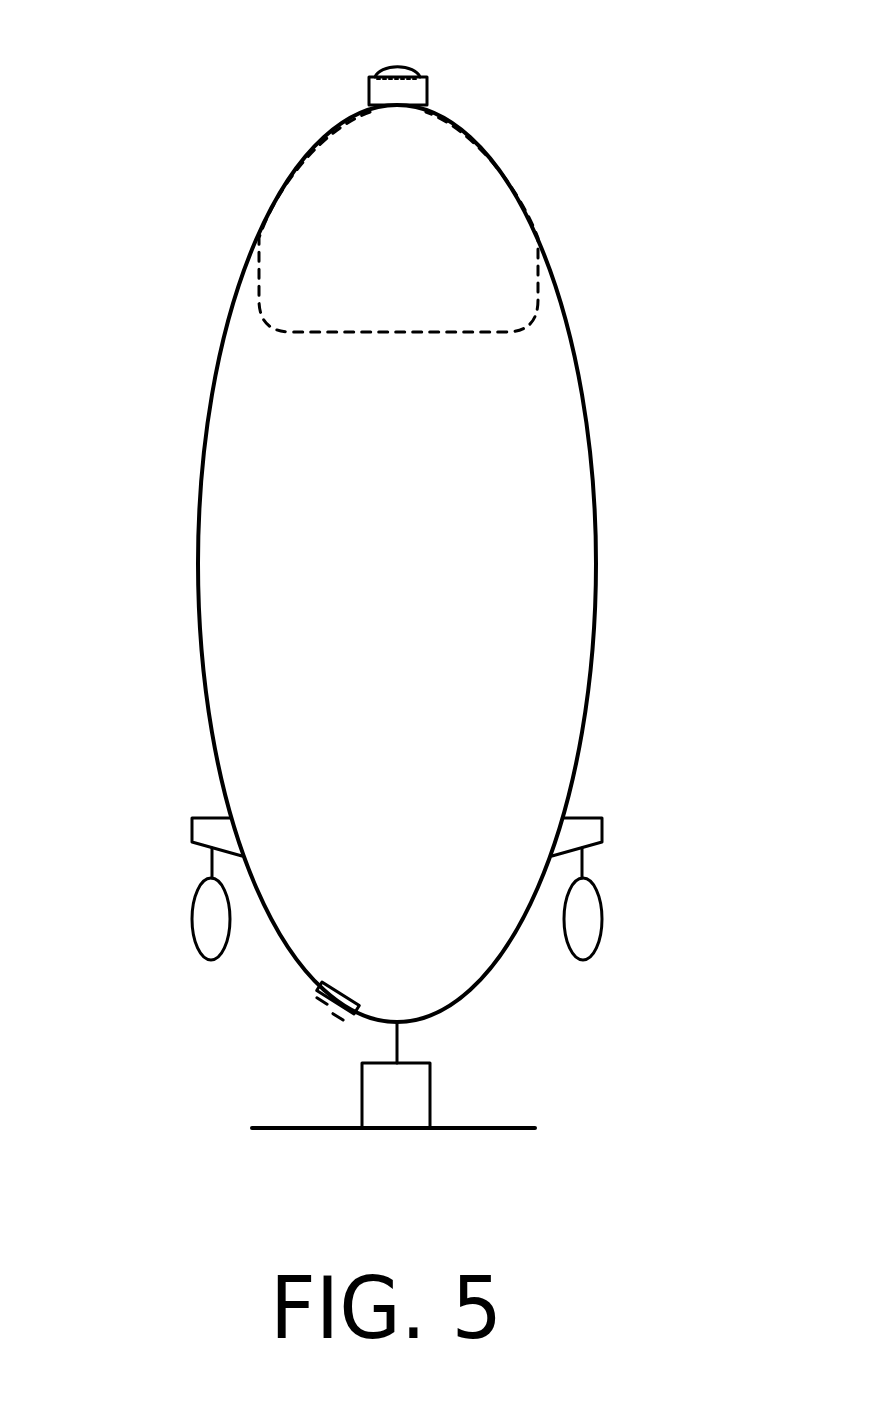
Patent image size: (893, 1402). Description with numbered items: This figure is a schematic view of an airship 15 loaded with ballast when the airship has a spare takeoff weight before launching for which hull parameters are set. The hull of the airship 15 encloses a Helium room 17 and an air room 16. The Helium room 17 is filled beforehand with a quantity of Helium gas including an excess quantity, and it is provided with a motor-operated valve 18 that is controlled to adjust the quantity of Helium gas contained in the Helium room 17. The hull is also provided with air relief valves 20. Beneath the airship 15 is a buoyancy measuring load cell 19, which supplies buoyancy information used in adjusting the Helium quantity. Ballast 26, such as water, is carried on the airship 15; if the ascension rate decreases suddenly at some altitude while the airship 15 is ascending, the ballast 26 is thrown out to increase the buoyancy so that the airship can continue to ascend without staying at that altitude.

The airship 15 is at (612, 482).
The air room 16 is at (498, 565).
The Helium room 17 is at (305, 333).
The motor-operated valve 18 is at (427, 88).
The buoyancy measuring load cell 19 is at (440, 1082).
The air relief valve 20 is at (312, 1022).
The ballast 26 is at (190, 915).